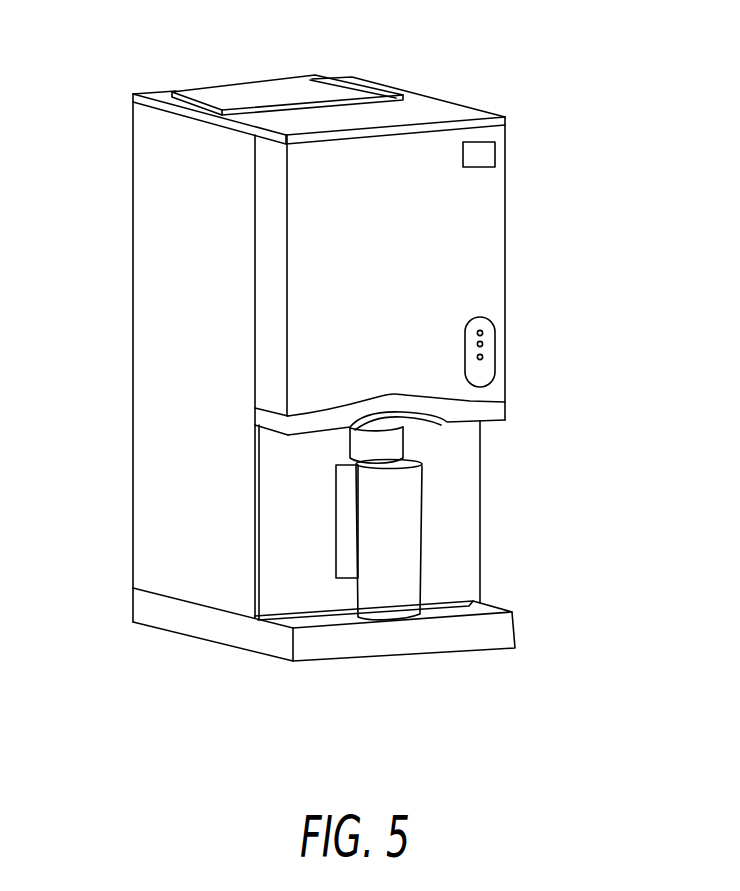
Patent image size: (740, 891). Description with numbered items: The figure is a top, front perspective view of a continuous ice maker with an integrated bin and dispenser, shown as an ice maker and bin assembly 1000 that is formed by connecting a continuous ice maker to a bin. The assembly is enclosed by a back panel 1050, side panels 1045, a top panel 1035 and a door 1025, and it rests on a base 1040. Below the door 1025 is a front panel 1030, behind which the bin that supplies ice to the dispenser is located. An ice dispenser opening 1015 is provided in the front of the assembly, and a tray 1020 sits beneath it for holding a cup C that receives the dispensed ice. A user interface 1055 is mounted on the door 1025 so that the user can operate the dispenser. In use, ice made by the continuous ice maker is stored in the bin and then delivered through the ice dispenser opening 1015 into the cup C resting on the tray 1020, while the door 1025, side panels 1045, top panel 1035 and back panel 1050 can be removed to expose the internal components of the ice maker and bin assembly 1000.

The ice maker and bin assembly 1000 is at (527, 283).
The ice dispenser opening 1015 is at (393, 443).
The tray 1020 is at (487, 600).
The door 1025 is at (480, 218).
The front panel 1030 is at (278, 557).
The top panel 1035 is at (443, 113).
The base 1040 is at (277, 640).
The side panels 1045 is at (506, 258).
The back panel 1050 is at (126, 222).
The user interface 1055 is at (488, 350).
The cup C is at (392, 549).